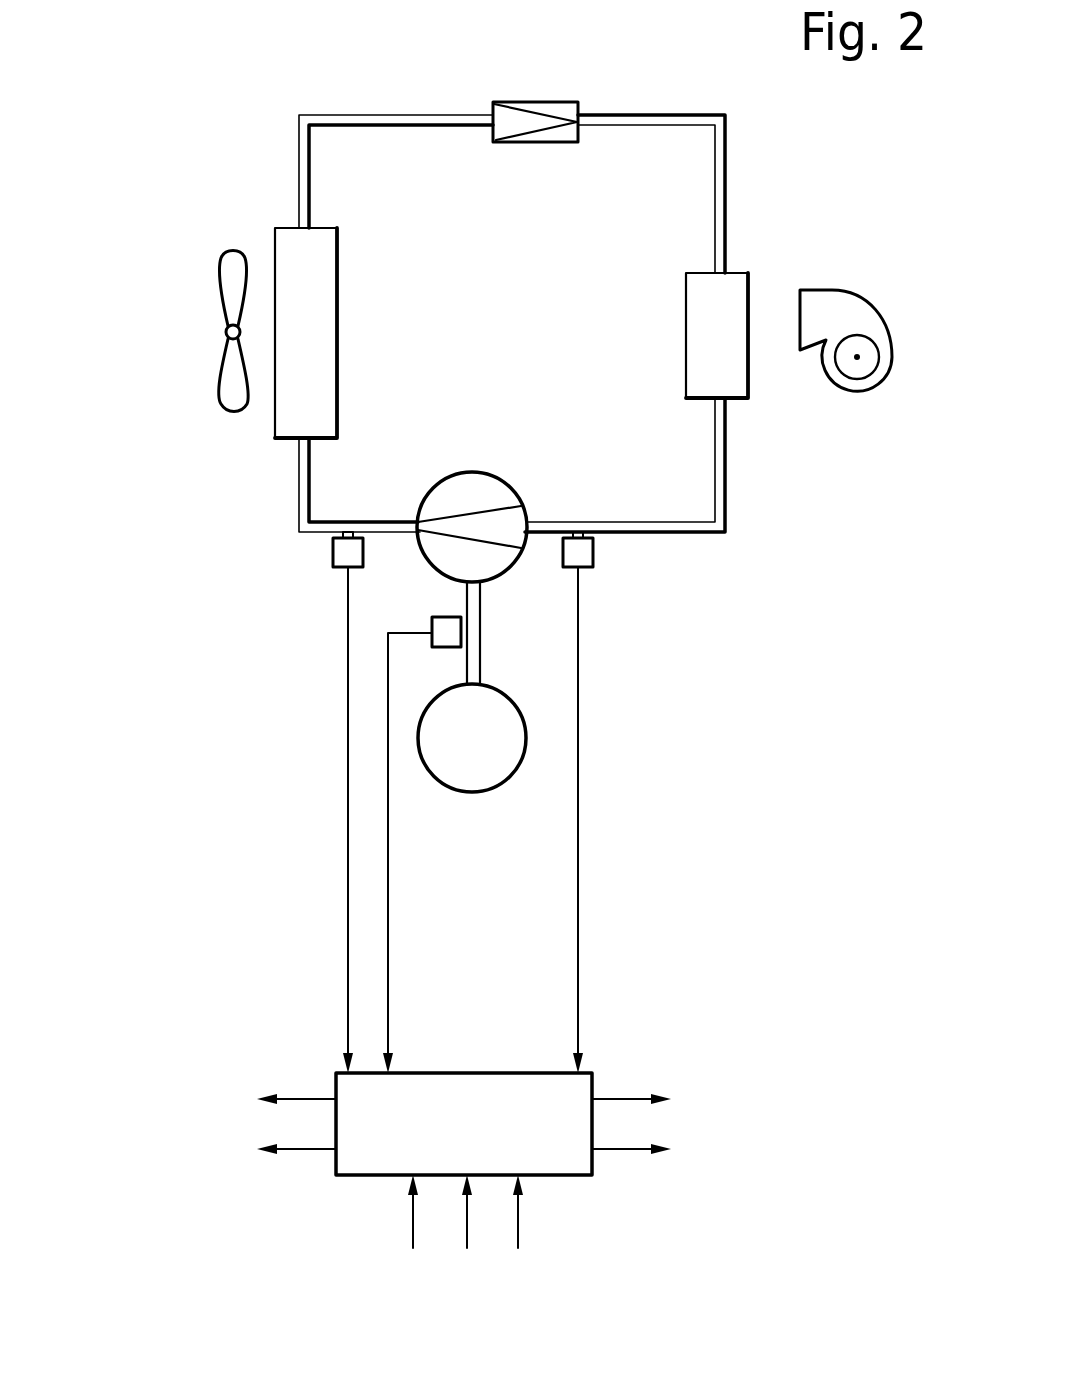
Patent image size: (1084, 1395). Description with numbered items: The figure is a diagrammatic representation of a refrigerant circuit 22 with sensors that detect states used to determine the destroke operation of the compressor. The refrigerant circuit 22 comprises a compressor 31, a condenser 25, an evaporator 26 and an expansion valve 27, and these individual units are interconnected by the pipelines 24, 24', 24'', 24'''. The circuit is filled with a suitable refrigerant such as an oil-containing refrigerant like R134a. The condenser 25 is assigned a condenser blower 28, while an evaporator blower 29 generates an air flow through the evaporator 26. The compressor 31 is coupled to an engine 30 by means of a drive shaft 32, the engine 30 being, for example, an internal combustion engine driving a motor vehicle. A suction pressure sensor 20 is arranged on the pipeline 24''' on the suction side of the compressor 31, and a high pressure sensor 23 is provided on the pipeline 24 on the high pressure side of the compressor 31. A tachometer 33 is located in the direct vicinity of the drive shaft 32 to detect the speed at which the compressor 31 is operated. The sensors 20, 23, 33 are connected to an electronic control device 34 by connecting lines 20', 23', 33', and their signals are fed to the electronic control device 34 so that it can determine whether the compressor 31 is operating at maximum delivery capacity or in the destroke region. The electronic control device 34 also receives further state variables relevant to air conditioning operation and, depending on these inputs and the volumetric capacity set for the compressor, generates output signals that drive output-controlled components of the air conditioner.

The suction pressure sensor 20 is at (630, 573).
The connecting line 20' is at (640, 820).
The refrigerant circuit 22 is at (280, 122).
The high pressure sensor 23 is at (297, 573).
The connecting line 23' is at (292, 820).
The pipeline 24 is at (280, 490).
The pipeline 24' is at (395, 116).
The pipeline 24'' is at (653, 139).
The pipeline 24''' is at (688, 470).
The condenser 25 is at (325, 340).
The evaporator 26 is at (698, 305).
The expansion valve 27 is at (541, 118).
The condenser blower 28 is at (222, 268).
The evaporator blower 29 is at (838, 300).
The engine 30 is at (475, 778).
The compressor 31 is at (472, 490).
The drive shaft 32 is at (475, 653).
The tachometer 33 is at (346, 649).
The connecting line 33' is at (443, 853).
The electronic control device 34 is at (575, 1167).